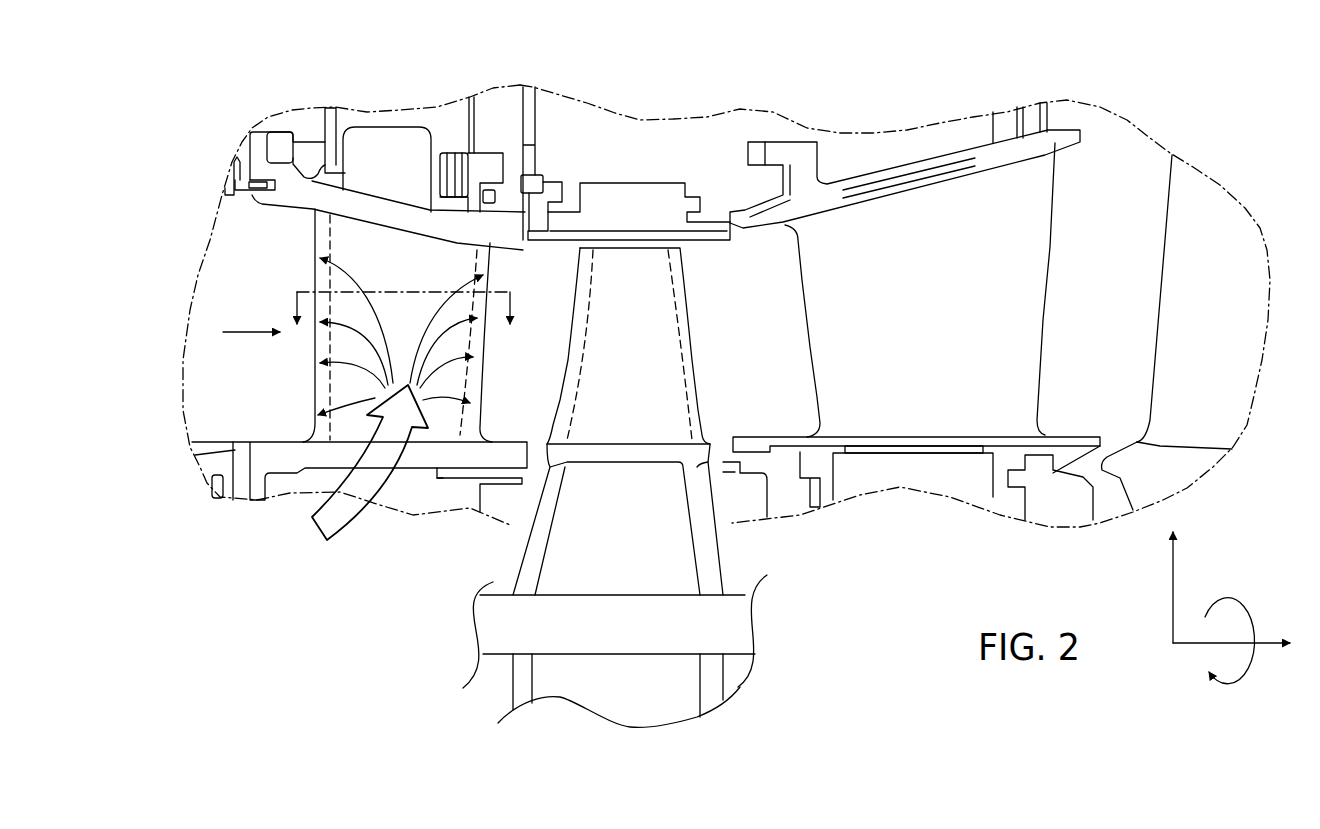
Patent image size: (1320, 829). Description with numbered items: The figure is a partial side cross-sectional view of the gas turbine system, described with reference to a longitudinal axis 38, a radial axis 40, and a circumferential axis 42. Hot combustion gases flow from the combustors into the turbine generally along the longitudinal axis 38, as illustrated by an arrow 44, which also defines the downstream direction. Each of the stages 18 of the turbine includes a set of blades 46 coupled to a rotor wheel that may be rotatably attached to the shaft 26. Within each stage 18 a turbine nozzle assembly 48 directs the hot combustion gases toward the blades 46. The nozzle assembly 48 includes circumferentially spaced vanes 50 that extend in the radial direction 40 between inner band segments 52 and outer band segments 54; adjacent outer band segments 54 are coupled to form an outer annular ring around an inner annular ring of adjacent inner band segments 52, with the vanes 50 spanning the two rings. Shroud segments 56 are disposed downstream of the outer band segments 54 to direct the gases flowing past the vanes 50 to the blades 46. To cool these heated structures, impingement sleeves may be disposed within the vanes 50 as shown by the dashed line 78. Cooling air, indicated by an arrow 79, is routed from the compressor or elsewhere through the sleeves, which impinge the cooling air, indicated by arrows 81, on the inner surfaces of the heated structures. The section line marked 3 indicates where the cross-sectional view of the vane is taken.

The stage 18 is at (720, 83).
The shaft 26 is at (720, 630).
The longitudinal axis 38 is at (1227, 645).
The radial axis 40 is at (1173, 592).
The circumferential axis 42 is at (1250, 613).
The arrow 44 is at (250, 332).
The blades 46 is at (619, 298).
The turbine nozzle assembly 48 is at (383, 548).
The vanes 50 is at (387, 280).
The inner band segments 52 is at (297, 455).
The outer band segments 54 is at (323, 200).
The shroud segments 56 is at (633, 227).
The dashed line 78 is at (327, 390).
The arrow 79 is at (380, 492).
The arrows 81 is at (372, 270).
The section line 3- 3 is at (402, 327).